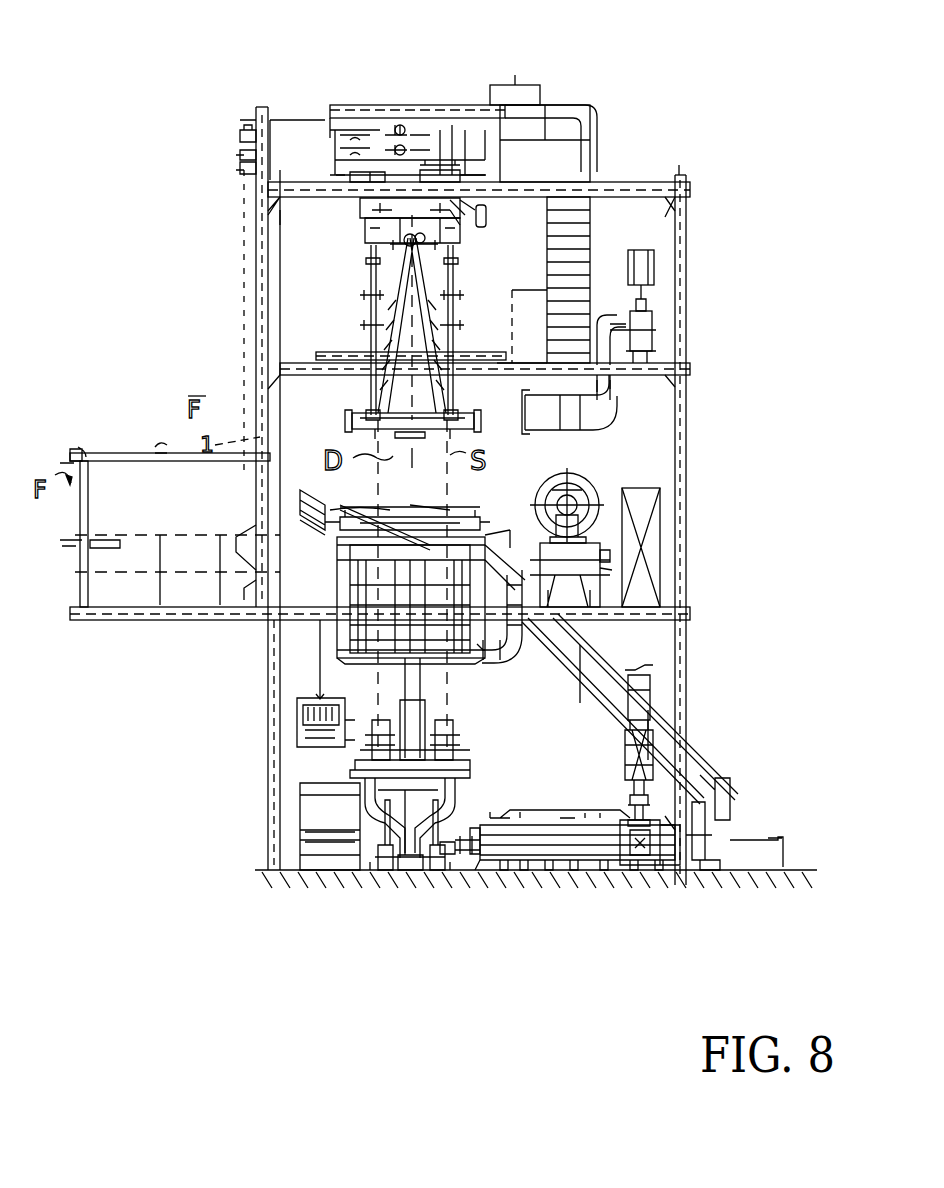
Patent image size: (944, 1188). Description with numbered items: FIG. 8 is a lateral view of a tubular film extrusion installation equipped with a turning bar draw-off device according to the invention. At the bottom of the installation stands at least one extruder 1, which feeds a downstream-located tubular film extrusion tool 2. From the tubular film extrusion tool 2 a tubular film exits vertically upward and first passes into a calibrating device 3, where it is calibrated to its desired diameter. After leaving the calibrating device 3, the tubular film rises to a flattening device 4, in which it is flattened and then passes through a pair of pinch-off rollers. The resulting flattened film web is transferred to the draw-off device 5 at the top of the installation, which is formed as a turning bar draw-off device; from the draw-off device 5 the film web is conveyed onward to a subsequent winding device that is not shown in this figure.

The extruder 1 is at (565, 812).
The tubular film extrusion tool 2 is at (431, 873).
The calibrating device 3 is at (462, 658).
The flattening device 4 is at (357, 292).
The draw-off device 5 is at (446, 92).